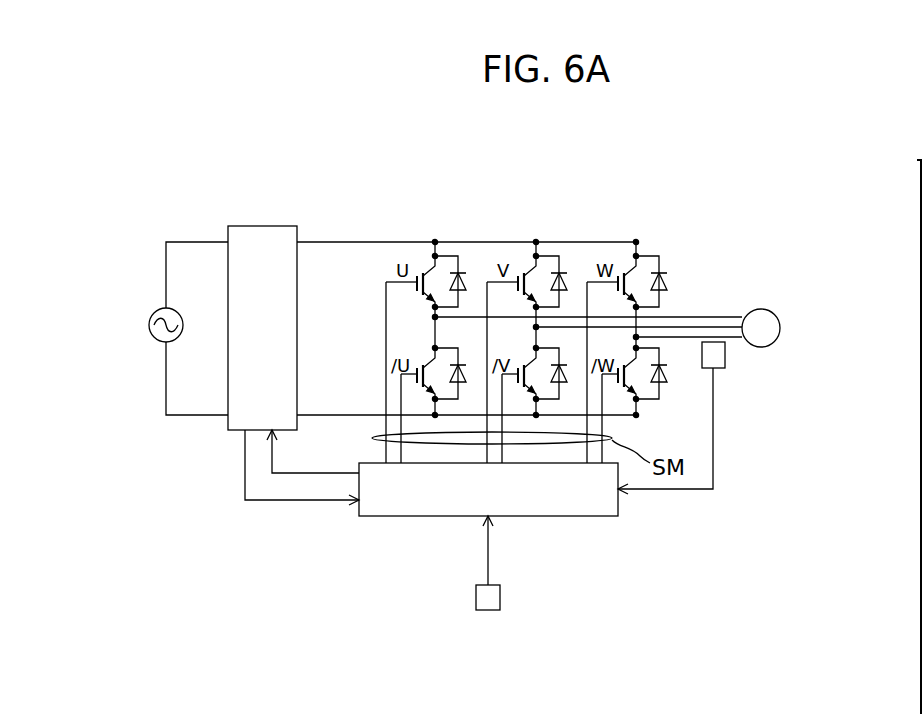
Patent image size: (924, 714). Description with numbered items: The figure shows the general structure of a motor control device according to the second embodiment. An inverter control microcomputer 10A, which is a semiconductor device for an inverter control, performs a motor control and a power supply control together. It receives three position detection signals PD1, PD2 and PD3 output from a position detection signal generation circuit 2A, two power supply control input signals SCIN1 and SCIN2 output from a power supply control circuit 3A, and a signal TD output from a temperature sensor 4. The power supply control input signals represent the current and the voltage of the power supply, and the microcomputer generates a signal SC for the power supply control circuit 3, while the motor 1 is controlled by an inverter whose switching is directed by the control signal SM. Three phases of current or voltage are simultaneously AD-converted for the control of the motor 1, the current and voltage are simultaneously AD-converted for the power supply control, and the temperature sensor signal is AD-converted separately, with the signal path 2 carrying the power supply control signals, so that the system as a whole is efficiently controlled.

The power supply control circuit 3A is at (256, 226).
The motor 1 is at (781, 328).
The position detection signal generation circuit 2A is at (701, 370).
The power supply control circuit 3 is at (705, 449).
The inverter control microcomputer 10A is at (405, 516).
The signal lines SC / SCIN1 2 is at (251, 478).
The temperature sensor 4 is at (488, 610).